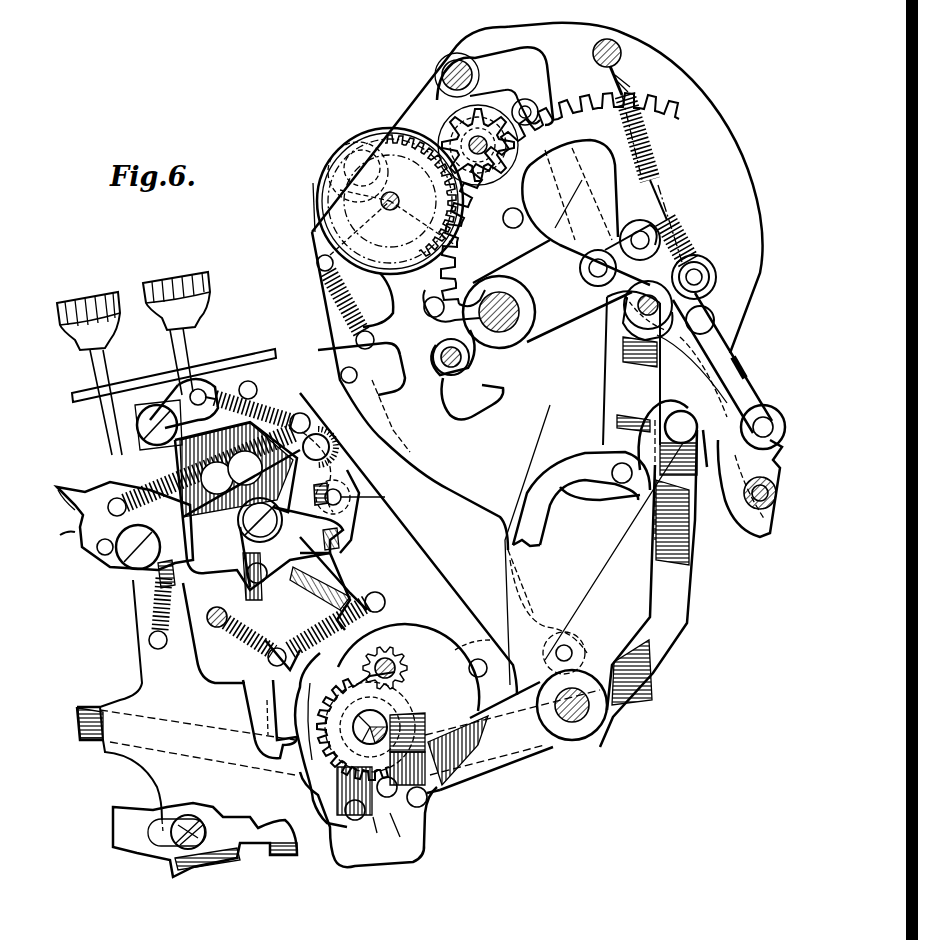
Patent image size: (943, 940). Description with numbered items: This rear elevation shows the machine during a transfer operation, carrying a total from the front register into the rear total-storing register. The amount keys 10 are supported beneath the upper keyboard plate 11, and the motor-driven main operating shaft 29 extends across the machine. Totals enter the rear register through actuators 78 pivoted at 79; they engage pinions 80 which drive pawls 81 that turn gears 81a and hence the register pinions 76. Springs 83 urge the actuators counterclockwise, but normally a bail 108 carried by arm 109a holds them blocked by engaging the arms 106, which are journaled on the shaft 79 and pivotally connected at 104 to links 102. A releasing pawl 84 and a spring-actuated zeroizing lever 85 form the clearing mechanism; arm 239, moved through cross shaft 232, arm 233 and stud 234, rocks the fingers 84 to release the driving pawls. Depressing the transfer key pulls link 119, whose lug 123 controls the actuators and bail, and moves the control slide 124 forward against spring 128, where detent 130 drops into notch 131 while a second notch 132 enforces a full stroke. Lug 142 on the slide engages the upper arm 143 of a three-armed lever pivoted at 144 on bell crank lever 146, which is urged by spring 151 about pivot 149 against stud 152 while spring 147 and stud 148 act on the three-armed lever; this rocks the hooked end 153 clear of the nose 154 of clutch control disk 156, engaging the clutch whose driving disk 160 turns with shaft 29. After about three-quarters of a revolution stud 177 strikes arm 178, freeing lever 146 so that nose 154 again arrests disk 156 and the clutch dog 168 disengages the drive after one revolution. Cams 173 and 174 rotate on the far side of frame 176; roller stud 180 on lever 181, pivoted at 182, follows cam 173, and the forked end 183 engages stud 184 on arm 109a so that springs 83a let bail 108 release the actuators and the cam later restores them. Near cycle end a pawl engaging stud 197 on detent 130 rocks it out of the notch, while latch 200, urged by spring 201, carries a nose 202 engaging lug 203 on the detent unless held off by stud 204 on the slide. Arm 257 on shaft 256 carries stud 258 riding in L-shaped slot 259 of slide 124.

The amount keys 10 is at (148, 285).
The upper keyboard plate 11 is at (76, 395).
The main operating shaft 29 is at (371, 728).
The register pinions 76 is at (338, 160).
The actuators 78 is at (615, 165).
The shaft 79 is at (632, 328).
The pinions 80 is at (455, 133).
The pawls 81 is at (462, 122).
The gears 81a is at (560, 199).
The springs 83 is at (648, 150).
The springs 83a is at (700, 258).
The releasing pawl 84 is at (488, 75).
The zeroizing lever 85 is at (410, 353).
The links 102 is at (535, 478).
The pivotal connection 104 is at (620, 485).
The arm 106 is at (750, 393).
The bail 108 is at (778, 498).
The arm 109a is at (707, 368).
The link 119 is at (128, 835).
The lug 123 is at (282, 852).
The control slide 124 is at (70, 520).
The spring 128 is at (143, 470).
The detent 130 is at (122, 568).
The notch 131 is at (60, 498).
The second notch 132 is at (70, 532).
The lug 142 is at (345, 540).
The three-armed lever 143 is at (325, 553).
The pivot 144 is at (250, 572).
The bell crank lever 146 is at (237, 540).
The spring 147 is at (240, 648).
The stud 148 is at (268, 670).
The pivot 149 is at (265, 507).
The spring 151 is at (329, 626).
The stud 152 is at (385, 602).
The hooked end 153 is at (265, 752).
The nose 154 is at (358, 836).
The clutch control disk 156 is at (351, 793).
The driving clutch disk 160 is at (340, 705).
The clutch dog 168 is at (387, 661).
The cam 173 is at (433, 655).
The cam 174 is at (327, 845).
The machine frame 176 is at (180, 769).
The stud 177 is at (428, 805).
The arm 178 is at (316, 603).
The roller stud 180 is at (400, 834).
The lever 181 is at (522, 745).
The pivot 182 is at (590, 735).
The forked end 183 is at (690, 522).
The stud 184 is at (672, 400).
The stud 197 is at (97, 563).
The latch 200 is at (176, 395).
The spring 201 is at (282, 415).
The nose 202 is at (195, 576).
The lug 203 is at (130, 613).
The stud 204 is at (118, 492).
The cross shaft 232 is at (513, 330).
The arm 233 is at (565, 298).
The stud 234 is at (619, 277).
The arm 239 is at (535, 68).
The shaft 256 is at (322, 443).
The arm 257 is at (335, 463).
The stud 258 is at (352, 500).
The L-shaped slot 259 is at (340, 492).